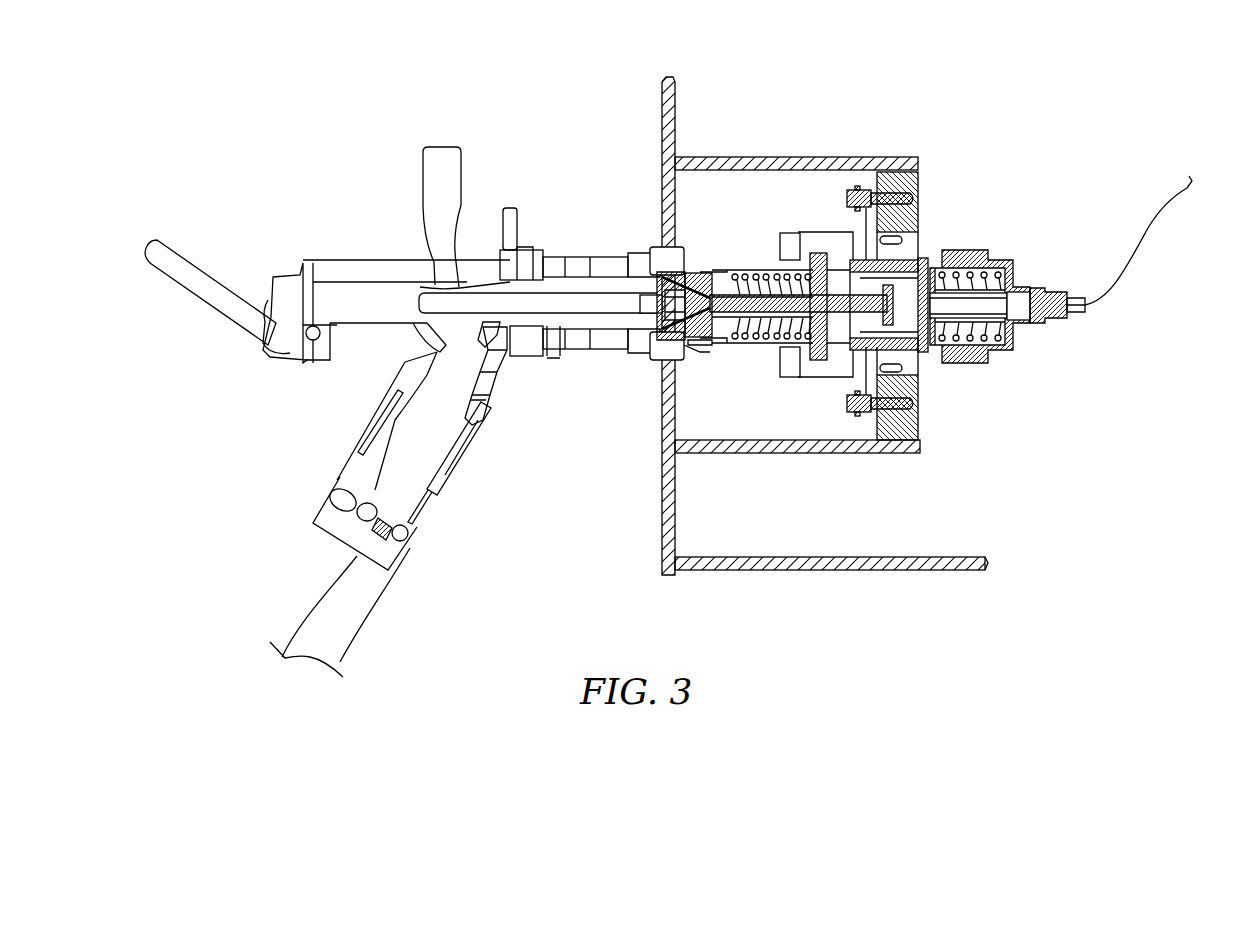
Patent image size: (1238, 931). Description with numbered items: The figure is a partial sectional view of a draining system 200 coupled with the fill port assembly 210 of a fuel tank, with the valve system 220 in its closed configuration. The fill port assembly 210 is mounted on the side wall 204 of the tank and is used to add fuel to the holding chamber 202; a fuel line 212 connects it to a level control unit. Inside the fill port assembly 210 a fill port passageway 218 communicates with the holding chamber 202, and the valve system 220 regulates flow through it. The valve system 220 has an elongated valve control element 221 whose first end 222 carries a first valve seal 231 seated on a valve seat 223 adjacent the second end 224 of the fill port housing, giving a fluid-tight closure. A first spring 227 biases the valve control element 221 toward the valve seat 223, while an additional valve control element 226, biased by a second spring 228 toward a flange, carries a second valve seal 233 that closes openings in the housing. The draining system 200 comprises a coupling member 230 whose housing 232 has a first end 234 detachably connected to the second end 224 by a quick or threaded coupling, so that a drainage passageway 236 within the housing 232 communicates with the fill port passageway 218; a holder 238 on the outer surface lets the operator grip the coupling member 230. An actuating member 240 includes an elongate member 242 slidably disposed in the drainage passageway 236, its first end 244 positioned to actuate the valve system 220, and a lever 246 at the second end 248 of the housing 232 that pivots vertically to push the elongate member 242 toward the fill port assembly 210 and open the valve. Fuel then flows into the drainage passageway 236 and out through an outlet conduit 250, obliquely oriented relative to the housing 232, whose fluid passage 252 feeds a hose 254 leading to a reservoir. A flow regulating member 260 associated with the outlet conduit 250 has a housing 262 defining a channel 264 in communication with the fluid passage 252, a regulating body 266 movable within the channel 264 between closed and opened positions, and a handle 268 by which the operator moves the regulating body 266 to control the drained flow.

The draining system 200 is at (668, 354).
The holding chamber 202 is at (814, 515).
The side wall 204 is at (662, 116).
The fill port assembly 210 is at (878, 247).
The fuel line 212 is at (1144, 232).
The fill port passageway 218 is at (866, 398).
The valve system 220 is at (650, 282).
The valve control element 221 is at (767, 290).
The first end 222 is at (689, 337).
The valve seat 223 is at (683, 357).
The second end 224 is at (648, 262).
The additional valve control element 226 is at (1007, 281).
The first spring 227 is at (741, 270).
The second spring 228 is at (984, 282).
The coupling member 230 is at (364, 262).
The first valve seal 231 is at (690, 272).
The housing 232 is at (567, 250).
The second valve seal 233 is at (915, 278).
The first end 234 is at (658, 246).
The drainage passageway 236 is at (493, 292).
The holder 238 is at (437, 148).
The actuating member 240 is at (158, 228).
The elongate member 242 is at (587, 297).
The first end 244 is at (669, 353).
The lever 246 is at (240, 276).
The second end 248 is at (287, 273).
The outlet conduit 250 is at (483, 402).
The fluid passage 252 is at (450, 400).
The hose 254 is at (355, 620).
The flow regulating member 260 is at (307, 512).
The housing 262 is at (353, 458).
The channel 264 is at (413, 458).
The regulating body 266 is at (410, 532).
The handle 268 is at (340, 477).